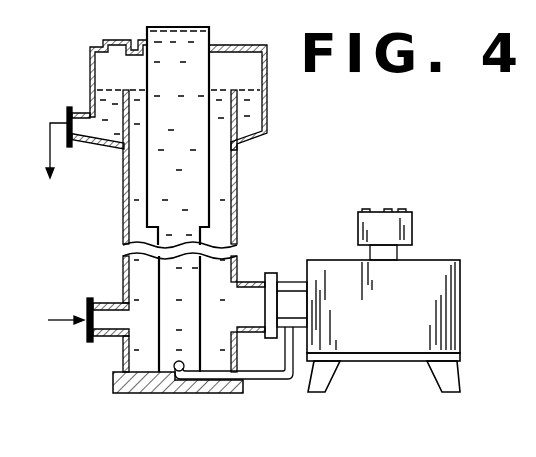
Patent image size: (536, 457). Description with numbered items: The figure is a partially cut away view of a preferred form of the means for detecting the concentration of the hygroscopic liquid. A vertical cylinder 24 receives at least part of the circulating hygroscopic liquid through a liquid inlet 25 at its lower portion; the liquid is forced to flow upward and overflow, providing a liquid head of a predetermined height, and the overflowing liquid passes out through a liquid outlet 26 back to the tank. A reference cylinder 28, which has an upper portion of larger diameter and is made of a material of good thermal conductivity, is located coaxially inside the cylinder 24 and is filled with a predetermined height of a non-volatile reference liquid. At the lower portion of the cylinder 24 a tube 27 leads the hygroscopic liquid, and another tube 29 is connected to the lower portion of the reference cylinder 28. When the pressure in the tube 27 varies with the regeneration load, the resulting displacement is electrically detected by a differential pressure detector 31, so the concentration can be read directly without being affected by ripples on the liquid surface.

The cylinder 24 is at (236, 196).
The liquid inlet 25 is at (87, 312).
The liquid outlet 26 is at (66, 117).
The tube 27 is at (246, 282).
The reference cylinder 28 is at (212, 175).
The tube 29 is at (285, 383).
The differential pressure detector 31 is at (459, 252).